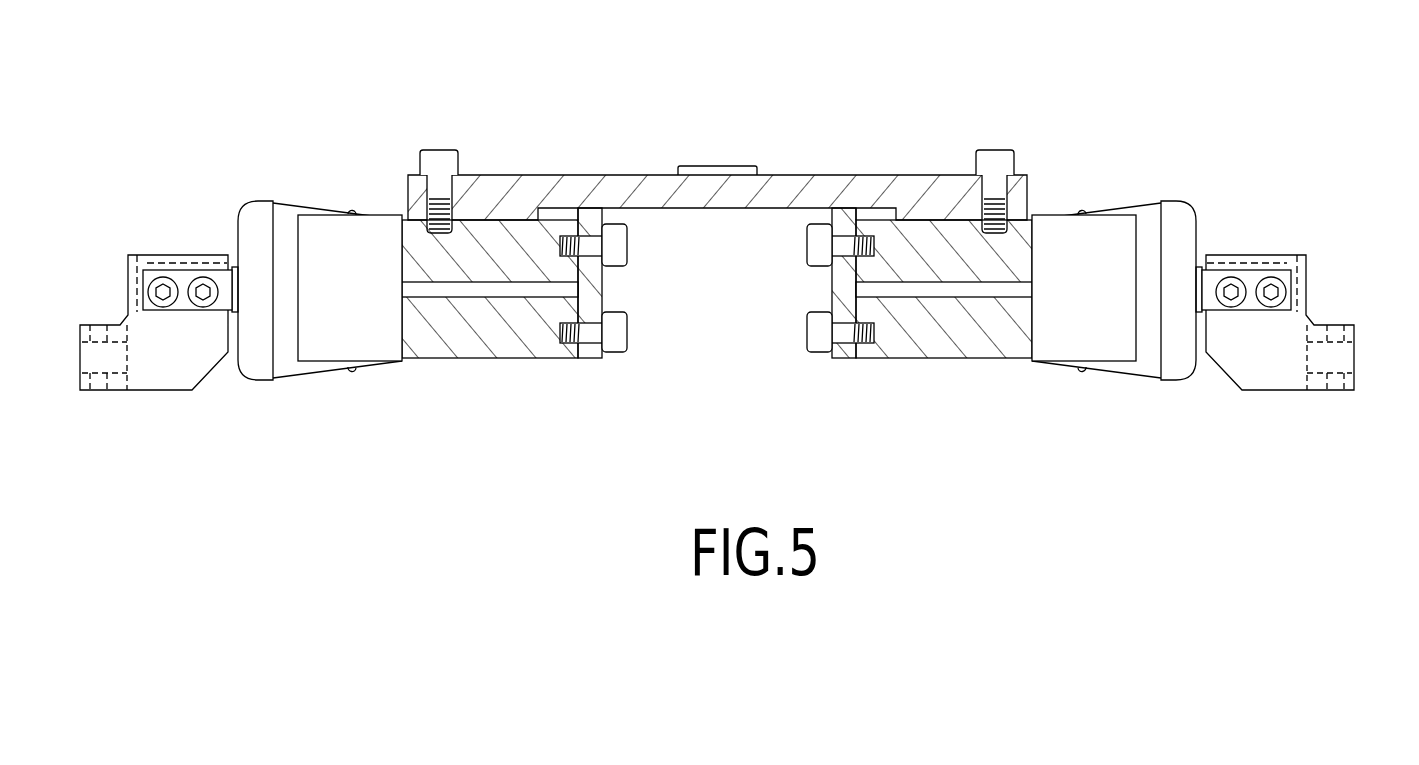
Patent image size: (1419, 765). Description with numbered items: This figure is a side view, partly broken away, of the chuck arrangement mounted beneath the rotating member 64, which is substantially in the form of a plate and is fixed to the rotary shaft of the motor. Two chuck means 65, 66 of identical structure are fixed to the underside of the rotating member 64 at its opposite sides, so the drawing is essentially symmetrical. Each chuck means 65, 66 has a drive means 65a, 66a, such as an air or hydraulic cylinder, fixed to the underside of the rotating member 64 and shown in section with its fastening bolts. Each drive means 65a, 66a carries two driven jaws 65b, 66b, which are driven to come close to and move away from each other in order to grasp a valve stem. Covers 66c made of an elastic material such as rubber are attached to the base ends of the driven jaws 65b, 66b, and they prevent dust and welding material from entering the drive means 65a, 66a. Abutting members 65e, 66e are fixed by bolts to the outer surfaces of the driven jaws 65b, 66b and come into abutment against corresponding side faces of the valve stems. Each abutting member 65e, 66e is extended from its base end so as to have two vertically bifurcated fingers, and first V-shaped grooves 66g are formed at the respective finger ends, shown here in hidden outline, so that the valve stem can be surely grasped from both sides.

The rotating member 64 is at (803, 183).
The chuck means 65 is at (1137, 130).
The drive means 65a is at (1053, 342).
The driven jaw 65b is at (1238, 330).
The abutting member 65e is at (1268, 372).
The chuck means 66 is at (293, 172).
The drive means 66a is at (383, 337).
The driven jaw 66b is at (182, 308).
The cover 66c is at (290, 360).
The abutting member 66e is at (178, 380).
The first V-shaped groove 66g is at (111, 323).